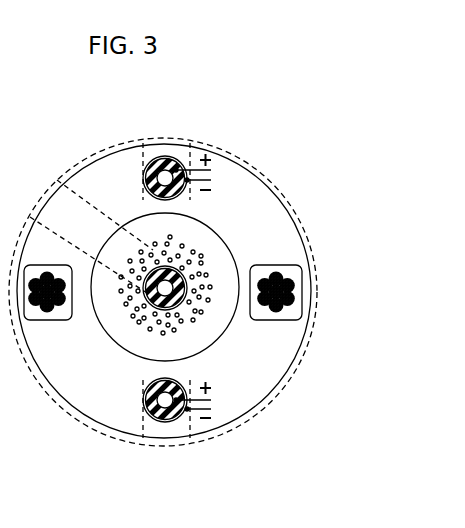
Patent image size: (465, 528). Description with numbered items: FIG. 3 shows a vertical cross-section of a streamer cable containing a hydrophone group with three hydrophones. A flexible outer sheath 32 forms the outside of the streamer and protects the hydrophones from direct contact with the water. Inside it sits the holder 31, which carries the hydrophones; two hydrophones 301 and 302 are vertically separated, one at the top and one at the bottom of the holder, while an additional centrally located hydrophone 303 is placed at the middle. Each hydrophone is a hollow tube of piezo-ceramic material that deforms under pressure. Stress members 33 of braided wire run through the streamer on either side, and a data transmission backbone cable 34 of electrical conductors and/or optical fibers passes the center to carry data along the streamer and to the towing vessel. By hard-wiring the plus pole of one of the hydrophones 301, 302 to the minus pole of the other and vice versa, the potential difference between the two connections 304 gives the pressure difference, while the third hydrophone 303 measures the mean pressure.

The holder 31 is at (80, 455).
The flexible outer sheath 32 is at (48, 178).
The stress member 33 is at (73, 268).
The data transmission backbone cable 34 is at (177, 332).
The hydrophone 301 is at (143, 185).
The hydrophone 302 is at (143, 406).
The centrally located hydrophone 303 is at (186, 148).
The lead region 304 is at (186, 421).